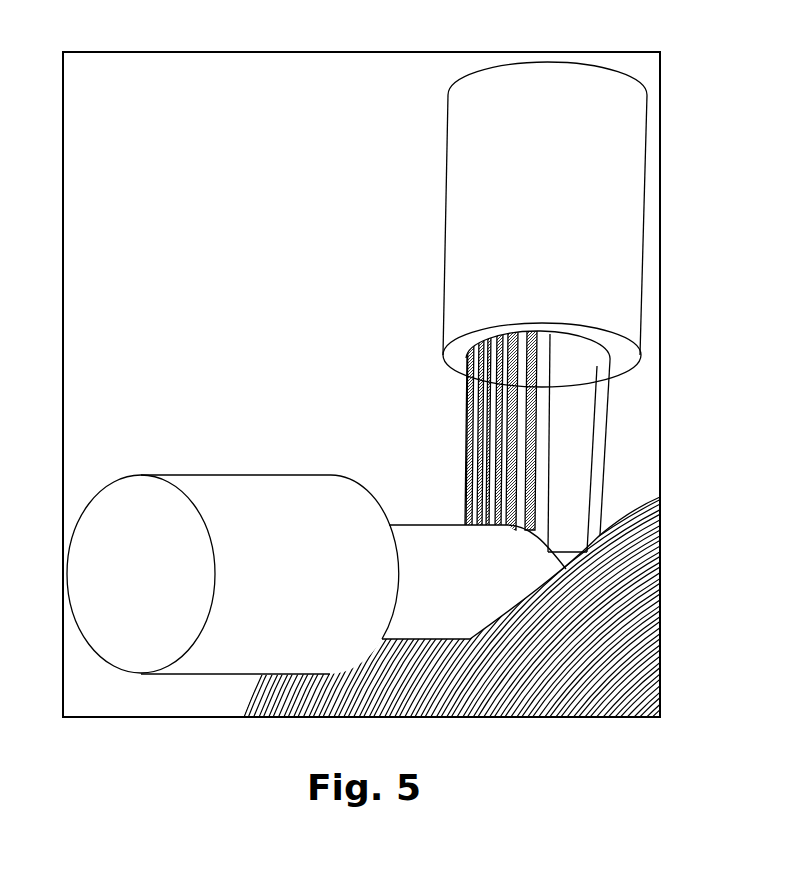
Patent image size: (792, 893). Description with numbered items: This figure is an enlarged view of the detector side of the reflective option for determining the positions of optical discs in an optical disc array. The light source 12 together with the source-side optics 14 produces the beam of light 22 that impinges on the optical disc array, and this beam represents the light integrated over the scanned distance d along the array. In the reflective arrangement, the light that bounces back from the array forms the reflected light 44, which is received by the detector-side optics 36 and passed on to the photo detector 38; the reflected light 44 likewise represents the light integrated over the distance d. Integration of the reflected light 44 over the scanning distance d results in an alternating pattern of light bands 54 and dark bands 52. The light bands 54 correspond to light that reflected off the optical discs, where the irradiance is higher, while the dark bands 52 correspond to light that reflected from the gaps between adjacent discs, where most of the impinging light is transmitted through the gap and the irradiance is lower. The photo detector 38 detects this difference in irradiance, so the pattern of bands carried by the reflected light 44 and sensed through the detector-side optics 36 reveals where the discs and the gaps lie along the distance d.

The light source 12 is at (233, 539).
The source-side optics 14 is at (238, 495).
The light 22 is at (412, 542).
The detector-side optics 36 is at (601, 224).
The photo detector 38 is at (620, 193).
The reflected light 44 is at (597, 437).
The dark bands 52 is at (497, 417).
The light bands 54 is at (492, 480).
The scanned distance d is at (458, 388).